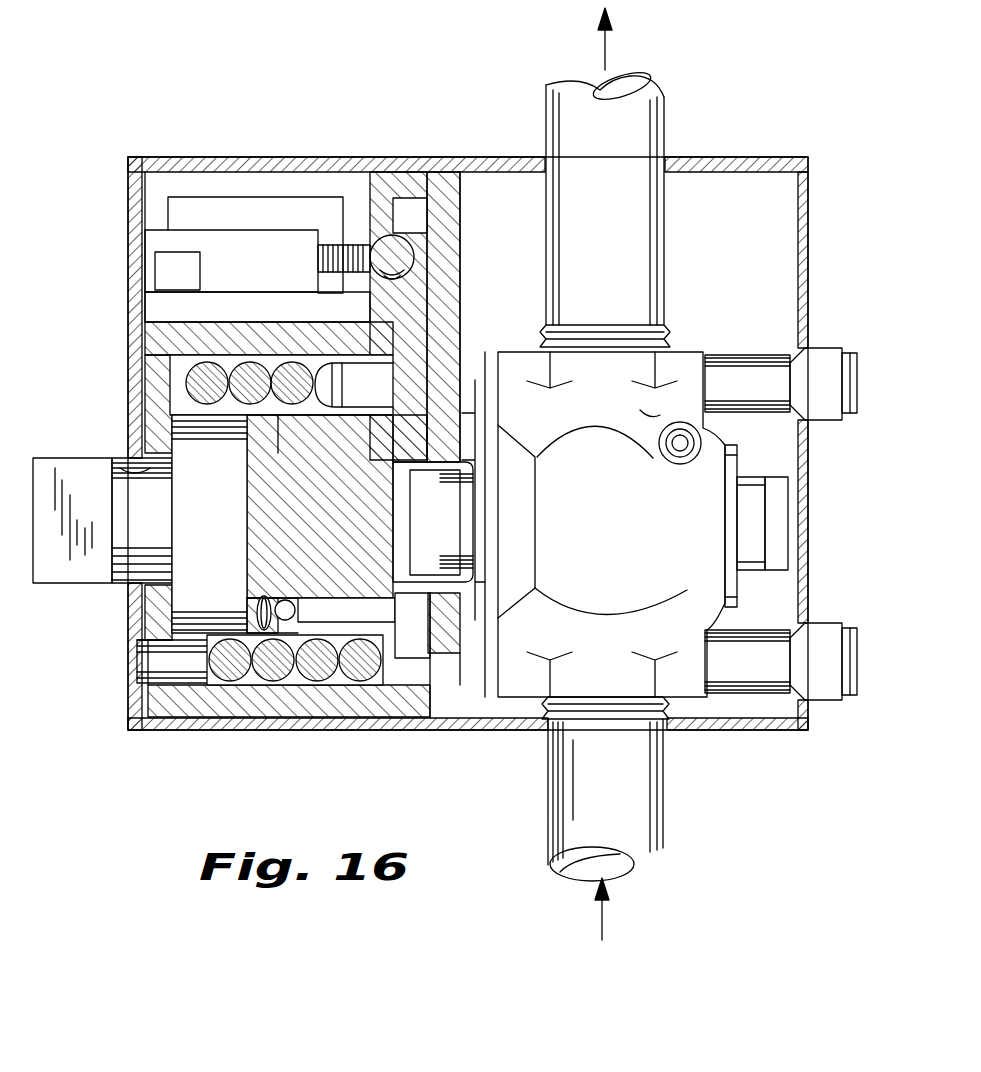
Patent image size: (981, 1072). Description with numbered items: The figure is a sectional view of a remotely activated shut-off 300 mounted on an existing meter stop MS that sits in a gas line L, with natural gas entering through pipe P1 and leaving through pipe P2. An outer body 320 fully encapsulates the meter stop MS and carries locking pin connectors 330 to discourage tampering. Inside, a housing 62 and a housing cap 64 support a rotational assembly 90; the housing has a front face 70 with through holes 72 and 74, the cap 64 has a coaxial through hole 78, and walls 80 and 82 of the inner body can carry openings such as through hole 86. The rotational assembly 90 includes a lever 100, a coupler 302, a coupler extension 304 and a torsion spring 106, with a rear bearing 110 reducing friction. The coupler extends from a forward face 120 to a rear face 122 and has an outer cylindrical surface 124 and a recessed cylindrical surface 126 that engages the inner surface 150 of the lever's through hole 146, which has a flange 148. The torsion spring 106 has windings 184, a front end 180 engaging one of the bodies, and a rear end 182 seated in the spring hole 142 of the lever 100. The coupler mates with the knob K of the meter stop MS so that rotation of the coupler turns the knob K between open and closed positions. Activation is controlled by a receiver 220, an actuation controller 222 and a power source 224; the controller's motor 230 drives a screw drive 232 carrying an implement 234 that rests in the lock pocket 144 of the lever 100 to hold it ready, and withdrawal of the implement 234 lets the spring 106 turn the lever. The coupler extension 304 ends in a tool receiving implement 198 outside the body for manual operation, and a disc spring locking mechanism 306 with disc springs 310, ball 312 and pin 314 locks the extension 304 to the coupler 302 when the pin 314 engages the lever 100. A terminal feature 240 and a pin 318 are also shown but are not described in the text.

The shut-off 300 is at (730, 135).
The outer body 320 is at (760, 162).
The pipe P1 is at (670, 822).
The pipe P2 is at (665, 118).
The line L is at (597, 957).
The knob or external member K is at (467, 542).
The meter stop MS is at (648, 410).
The cylindrical surface 126 is at (488, 618).
The rear face 122 is at (470, 437).
The locking pin connectors 330 is at (820, 360).
The housing 62 is at (148, 340).
The front face 70 is at (148, 385).
The front end 180 is at (150, 700).
The through hole 74 is at (160, 660).
The rotational assembly 90 is at (135, 630).
The tool receiving implement 198 is at (75, 590).
The through hole 72 is at (130, 462).
The power source 224 is at (225, 212).
The receiver 220 is at (220, 295).
The terminal 240 is at (145, 263).
The wall 80 is at (208, 330).
The through hole 86 is at (345, 245).
The motor 230 is at (195, 248).
The actuation controller 222 is at (265, 222).
The screw drive 232 is at (318, 225).
The implement 234 is at (395, 250).
The lever or disconnect cam 100 is at (430, 215).
The lock pocket or hole 144 is at (425, 235).
The housing cap 64 is at (445, 220).
The wall 82 is at (440, 295).
The rear end 182 is at (470, 285).
The rear bearing 110 is at (455, 345).
The through hole 78 is at (480, 352).
The spring hole 142 is at (340, 358).
The outer cylindrical surface 124 is at (275, 365).
The flange 148 is at (465, 395).
The inner surface 150 is at (422, 415).
The through hole 146 is at (375, 418).
The forward face 120 is at (248, 445).
The coupler 302 is at (295, 503).
The pin 318 is at (257, 598).
The disc springs 310 is at (257, 610).
The ball 312 is at (290, 602).
The pin 314 is at (335, 605).
The coupler extension 304 is at (200, 680).
The windings 184 is at (265, 680).
The torsion spring 106 is at (312, 695).
The disc spring locking mechanism 306 is at (352, 660).